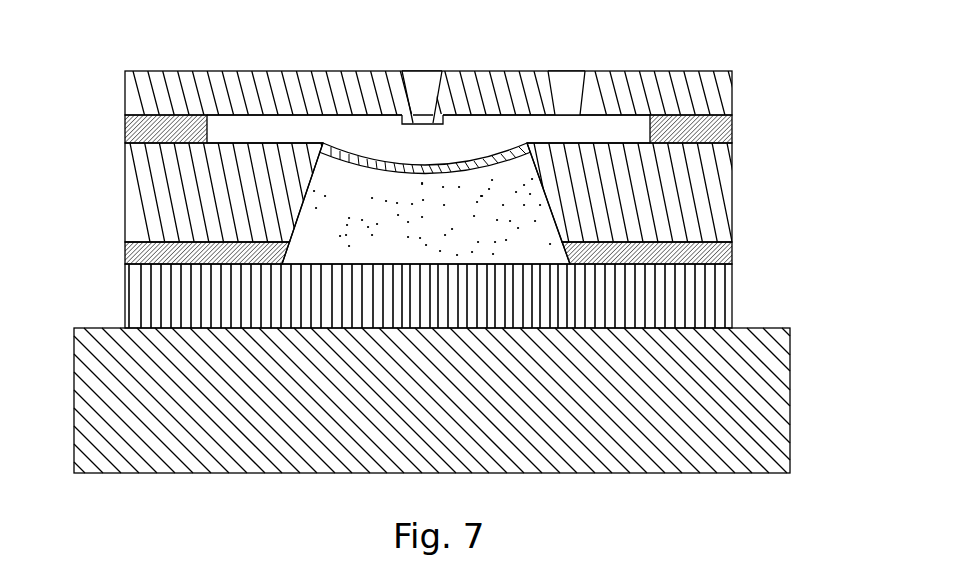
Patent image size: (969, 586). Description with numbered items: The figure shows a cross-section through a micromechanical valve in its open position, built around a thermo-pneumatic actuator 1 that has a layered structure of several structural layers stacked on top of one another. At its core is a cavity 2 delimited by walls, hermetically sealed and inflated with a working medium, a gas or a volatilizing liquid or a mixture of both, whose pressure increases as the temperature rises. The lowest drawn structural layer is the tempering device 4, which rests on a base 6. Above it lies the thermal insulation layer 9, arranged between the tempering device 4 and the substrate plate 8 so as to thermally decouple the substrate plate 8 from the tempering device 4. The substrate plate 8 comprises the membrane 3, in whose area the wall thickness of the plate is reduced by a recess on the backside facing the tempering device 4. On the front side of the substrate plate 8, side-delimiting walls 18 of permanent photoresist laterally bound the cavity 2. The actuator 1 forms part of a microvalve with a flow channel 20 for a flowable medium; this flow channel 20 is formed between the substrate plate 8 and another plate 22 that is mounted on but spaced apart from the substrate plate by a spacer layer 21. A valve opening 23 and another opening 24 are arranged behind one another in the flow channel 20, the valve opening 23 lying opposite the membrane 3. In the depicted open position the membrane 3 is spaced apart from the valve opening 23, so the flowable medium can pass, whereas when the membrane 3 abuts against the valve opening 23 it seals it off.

The thermo-pneumatic actuator 1 is at (612, 490).
The cavity 2 is at (426, 239).
The membrane 3 is at (464, 170).
The tempering device 4 is at (722, 300).
The substrate / base 6 is at (663, 460).
The substrate plate 8 is at (128, 200).
The thermal insulation layer 9 is at (733, 250).
The side-delimiting walls 18 is at (127, 252).
The flow channel 20 is at (496, 149).
The spacer layer 21 is at (130, 132).
The other plate 22 is at (130, 98).
The valve opening 23 is at (427, 100).
The other opening 24 is at (566, 88).